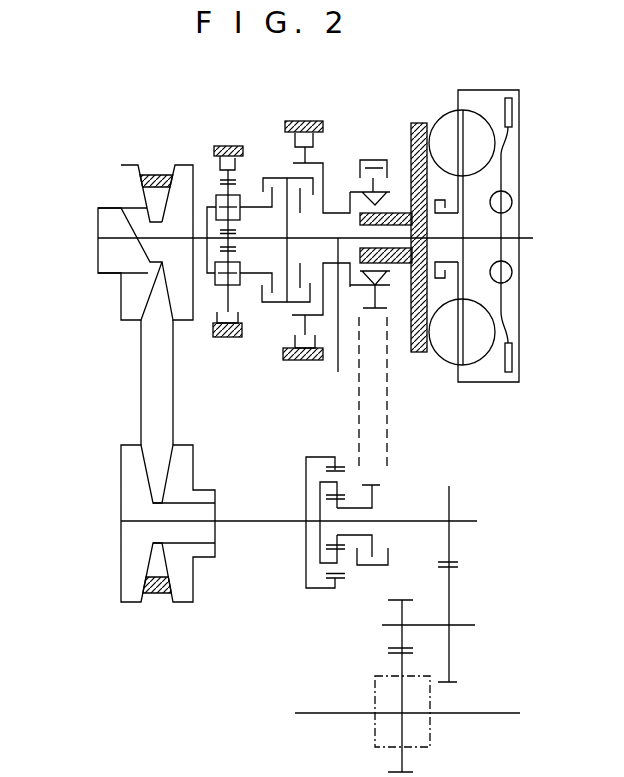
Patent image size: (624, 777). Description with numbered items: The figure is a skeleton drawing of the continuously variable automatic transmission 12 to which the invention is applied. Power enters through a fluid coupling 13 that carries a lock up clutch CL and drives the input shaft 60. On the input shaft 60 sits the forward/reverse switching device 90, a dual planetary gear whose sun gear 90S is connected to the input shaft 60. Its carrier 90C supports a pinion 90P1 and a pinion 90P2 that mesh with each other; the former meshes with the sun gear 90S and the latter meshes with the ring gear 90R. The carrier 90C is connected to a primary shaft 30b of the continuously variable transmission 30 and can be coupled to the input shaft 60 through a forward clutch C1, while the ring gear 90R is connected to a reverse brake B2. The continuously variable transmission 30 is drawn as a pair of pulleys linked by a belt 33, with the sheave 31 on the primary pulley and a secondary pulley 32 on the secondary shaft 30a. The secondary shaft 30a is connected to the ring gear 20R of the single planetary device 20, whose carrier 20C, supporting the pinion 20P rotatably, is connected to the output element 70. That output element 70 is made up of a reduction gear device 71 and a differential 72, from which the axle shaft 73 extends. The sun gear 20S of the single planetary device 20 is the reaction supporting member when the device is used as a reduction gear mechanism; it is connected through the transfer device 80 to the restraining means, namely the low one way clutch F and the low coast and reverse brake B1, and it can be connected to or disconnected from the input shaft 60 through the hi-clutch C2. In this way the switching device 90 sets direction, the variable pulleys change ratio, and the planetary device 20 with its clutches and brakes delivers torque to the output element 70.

The continuously variable automatic transmission 12 is at (142, 98).
The fluid coupling 13 is at (460, 220).
The single planetary device 20 is at (336, 530).
The carrier 20C is at (306, 503).
The pinion 20P is at (337, 557).
The ring gear 20R is at (306, 590).
The sun gear 20S is at (365, 510).
The continuously variable transmission 30 is at (132, 213).
The secondary shaft 30a is at (235, 526).
The primary shaft 30b is at (145, 240).
The movable sheave of primary pulley 31 is at (125, 172).
The secondary pulley 32 is at (127, 570).
The belt 33 is at (150, 594).
The input shaft 60 is at (340, 321).
The output element 70 is at (457, 617).
The reduction gear device 71 is at (457, 573).
The differential 72 is at (432, 702).
The axle shaft 73 is at (320, 712).
The transfer device 80 is at (393, 407).
The forward/reverse switching device 90 is at (172, 249).
The carrier 90C is at (226, 338).
The pinion 90P1 is at (215, 263).
The pinion 90P2 is at (216, 200).
The ring gear 90R is at (220, 178).
The sun gear 90S is at (238, 252).
The low coast & reverse brake B1 is at (303, 227).
The reverse brake B2 is at (228, 145).
The forward clutch C1 is at (276, 227).
The hi-clutch C2 is at (313, 182).
The low one way clutch F is at (378, 234).
The lock up clutch CL is at (432, 67).